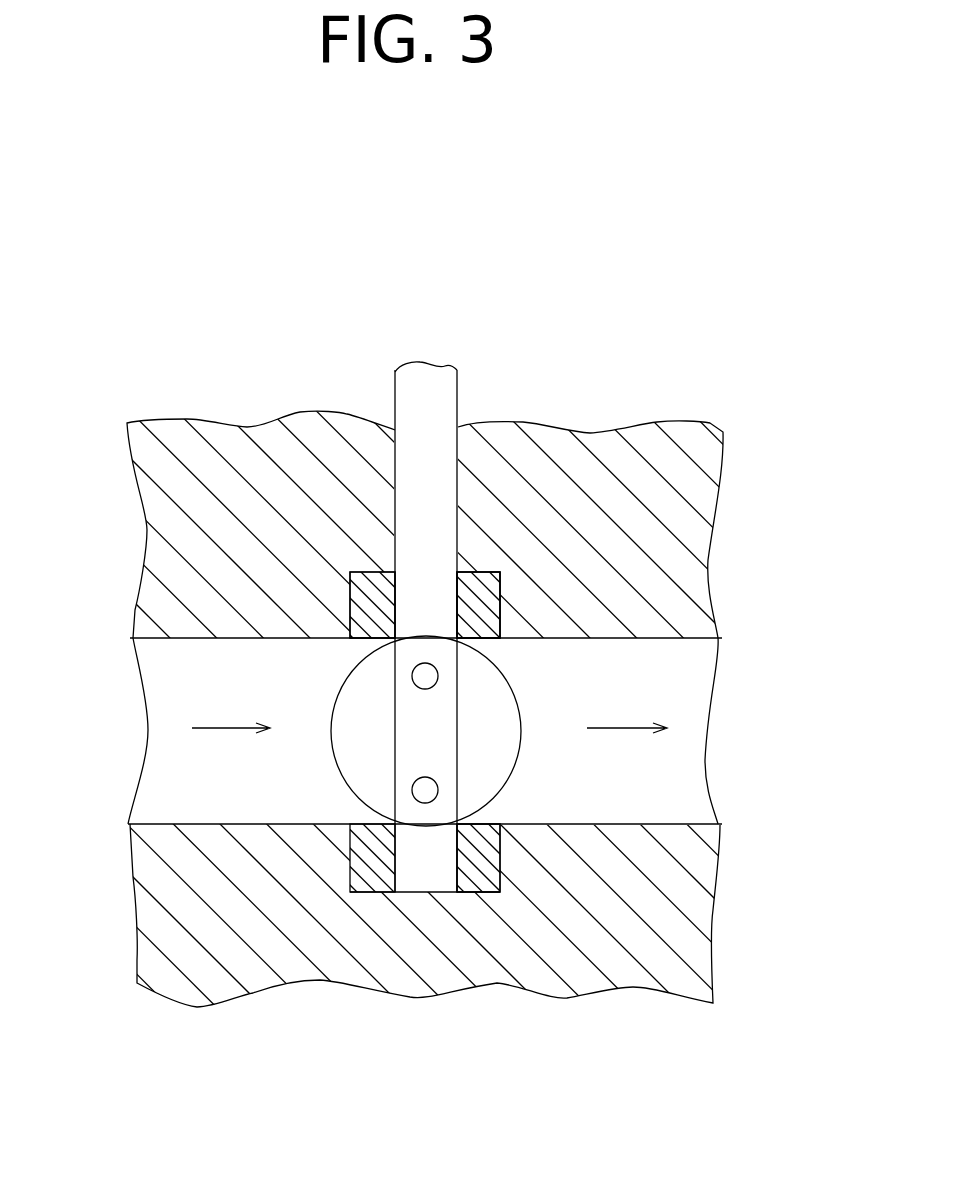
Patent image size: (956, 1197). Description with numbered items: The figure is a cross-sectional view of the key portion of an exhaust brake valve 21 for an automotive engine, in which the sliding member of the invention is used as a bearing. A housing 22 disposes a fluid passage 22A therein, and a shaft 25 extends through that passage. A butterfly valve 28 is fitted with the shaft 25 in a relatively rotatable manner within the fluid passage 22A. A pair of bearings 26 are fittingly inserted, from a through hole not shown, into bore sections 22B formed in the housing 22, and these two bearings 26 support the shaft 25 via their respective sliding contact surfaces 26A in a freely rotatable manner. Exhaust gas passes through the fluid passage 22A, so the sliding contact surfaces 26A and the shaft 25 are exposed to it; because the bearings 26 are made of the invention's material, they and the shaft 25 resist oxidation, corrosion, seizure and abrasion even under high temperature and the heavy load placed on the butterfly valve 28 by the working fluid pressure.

The exhaust brake valve 21 is at (604, 696).
The housing 22 is at (198, 468).
The fluid passage 22A is at (203, 823).
The bore sections 22B is at (485, 592).
The shaft 25 is at (402, 398).
The bearings 26 is at (370, 584).
The sliding contact surfaces 26A is at (485, 592).
The butterfly valve 28 is at (353, 707).